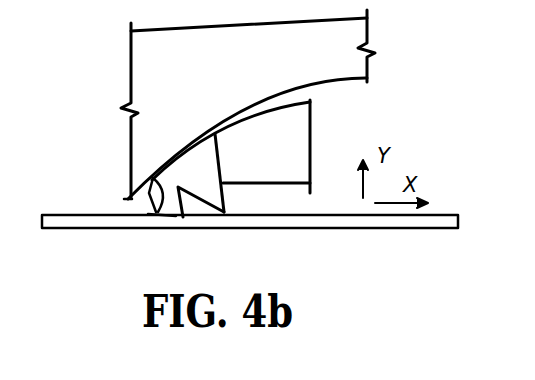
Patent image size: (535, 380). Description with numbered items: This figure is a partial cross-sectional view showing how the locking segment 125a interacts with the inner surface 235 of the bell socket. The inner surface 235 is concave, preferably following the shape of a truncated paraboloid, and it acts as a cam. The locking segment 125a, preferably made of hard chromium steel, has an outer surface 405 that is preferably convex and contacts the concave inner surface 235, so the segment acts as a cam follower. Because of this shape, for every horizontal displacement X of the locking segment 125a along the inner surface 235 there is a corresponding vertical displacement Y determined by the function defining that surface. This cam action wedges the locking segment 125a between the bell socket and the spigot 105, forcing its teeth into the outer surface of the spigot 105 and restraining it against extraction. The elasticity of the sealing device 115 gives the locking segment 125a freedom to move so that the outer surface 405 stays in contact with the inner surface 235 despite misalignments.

The inner surface 235 is at (240, 109).
The sealing device 115 is at (288, 152).
The locking segment 125a is at (202, 165).
The outer surface 405 is at (152, 203).
The spigot 105 is at (392, 221).